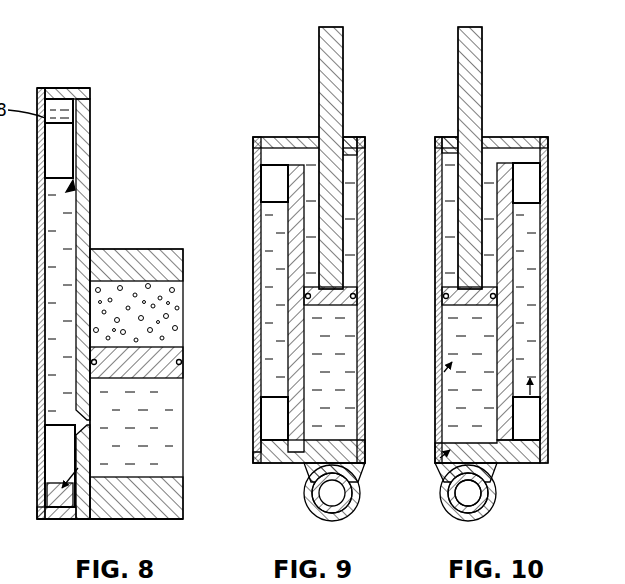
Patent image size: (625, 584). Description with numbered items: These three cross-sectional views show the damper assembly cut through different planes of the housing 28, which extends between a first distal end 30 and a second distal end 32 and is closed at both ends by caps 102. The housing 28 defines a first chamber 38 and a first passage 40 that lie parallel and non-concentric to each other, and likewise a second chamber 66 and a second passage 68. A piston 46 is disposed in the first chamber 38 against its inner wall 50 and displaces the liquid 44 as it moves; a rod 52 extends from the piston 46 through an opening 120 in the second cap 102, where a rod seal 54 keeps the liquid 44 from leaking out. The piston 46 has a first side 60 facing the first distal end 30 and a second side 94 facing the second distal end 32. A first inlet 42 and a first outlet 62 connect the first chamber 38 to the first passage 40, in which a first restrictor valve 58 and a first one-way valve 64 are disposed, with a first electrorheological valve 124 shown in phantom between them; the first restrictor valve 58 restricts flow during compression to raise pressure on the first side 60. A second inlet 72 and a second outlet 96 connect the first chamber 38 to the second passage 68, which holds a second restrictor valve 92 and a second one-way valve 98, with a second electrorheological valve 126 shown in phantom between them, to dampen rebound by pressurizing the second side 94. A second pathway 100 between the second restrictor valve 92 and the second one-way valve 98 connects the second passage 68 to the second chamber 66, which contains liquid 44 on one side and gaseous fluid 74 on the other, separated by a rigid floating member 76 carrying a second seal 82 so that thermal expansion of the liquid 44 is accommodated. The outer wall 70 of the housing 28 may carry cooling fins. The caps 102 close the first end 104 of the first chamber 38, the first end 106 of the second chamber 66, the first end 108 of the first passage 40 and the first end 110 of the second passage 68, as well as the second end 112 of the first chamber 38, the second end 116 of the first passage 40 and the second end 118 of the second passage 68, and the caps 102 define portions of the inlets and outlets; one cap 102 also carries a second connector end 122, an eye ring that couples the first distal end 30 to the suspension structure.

In FIG. 8, the housing 28 is at (90, 200).
In FIG. 9, the housing 28 is at (355, 302).
In FIG. 10, the housing 28 is at (548, 164).
In FIG. 8, the first distal end 30 is at (82, 520).
In FIG. 9, the first distal end 30 is at (260, 465).
In FIG. 10, the first distal end 30 is at (546, 464).
In FIG. 8, the second distal end 32 is at (82, 88).
In FIG. 9, the second distal end 32 is at (363, 137).
In FIG. 10, the second distal end 32 is at (543, 137).
In FIG. 9, the first chamber 38 is at (359, 198).
In FIG. 10, the first chamber 38 is at (440, 387).
In FIG. 9, the first passage 40 is at (270, 272).
In FIG. 9, the first inlet 42 is at (300, 446).
In FIG. 8, the liquid 44 is at (60, 290).
In FIG. 9, the liquid 44 is at (314, 146).
In FIG. 10, the liquid 44 is at (532, 250).
In FIG. 9, the piston 46 is at (343, 305).
In FIG. 10, the piston 46 is at (443, 296).
In FIG. 10, the inner wall 50 is at (443, 183).
In FIG. 9, the rod 52 is at (344, 50).
In FIG. 10, the rod 52 is at (483, 63).
In FIG. 9, the rod seal 54 is at (348, 143).
In FIG. 10, the rod seal 54 is at (455, 148).
In FIG. 9, the first restrictor valve 58 is at (273, 408).
In FIG. 9, the first side 60 is at (337, 308).
In FIG. 10, the first side 60 is at (512, 328).
In FIG. 9, the first outlet 62 is at (271, 155).
In FIG. 9, the first one-way valve 64 is at (273, 185).
In FIG. 8, the second chamber 66 is at (176, 323).
In FIG. 8, the second passage 68 is at (78, 178).
In FIG. 10, the second passage 68 is at (532, 382).
In FIG. 10, the outer wall 70 is at (548, 380).
In FIG. 10, the second inlet 72 is at (513, 148).
In FIG. 8, the gaseous fluid 74 is at (148, 290).
In FIG. 8, the member 76 is at (142, 368).
In FIG. 10, the second seal 82 is at (518, 287).
In FIG. 8, the second restrictor valve 92 is at (67, 140).
In FIG. 10, the second restrictor valve 92 is at (530, 175).
In FIG. 9, the second side 94 is at (353, 285).
In FIG. 10, the second side 94 is at (485, 277).
In FIG. 10, the second outlet 96 is at (448, 506).
In FIG. 8, the second one-way valve 98 is at (43, 463).
In FIG. 10, the second one-way valve 98 is at (538, 440).
In FIG. 8, the second pathway 100 is at (75, 418).
In FIG. 8, the cap 102 is at (75, 88).
In FIG. 9, the cap 102 is at (268, 140).
In FIG. 10, the cap 102 is at (484, 147).
In FIG. 10, the first end of the first chamber 104 is at (449, 438).
In FIG. 8, the first end of the second chamber 106 is at (182, 470).
In FIG. 9, the first end of the first passage 108 is at (280, 445).
In FIG. 8, the first end of the second passage 110 is at (166, 465).
In FIG. 10, the first end of the second passage 110 is at (533, 467).
In FIG. 9, the second end of the first chamber 112 is at (356, 162).
In FIG. 9, the second end of the first passage 116 is at (279, 146).
In FIG. 10, the second end of the second passage 118 is at (548, 141).
In FIG. 9, the opening 120 is at (314, 136).
In FIG. 9, the second connector end 122 is at (353, 507).
In FIG. 10, the second connector end 122 is at (477, 518).
In FIG. 9, the first electrorheological valve 124 is at (252, 250).
In FIG. 10, the second electrorheological valve 126 is at (548, 223).